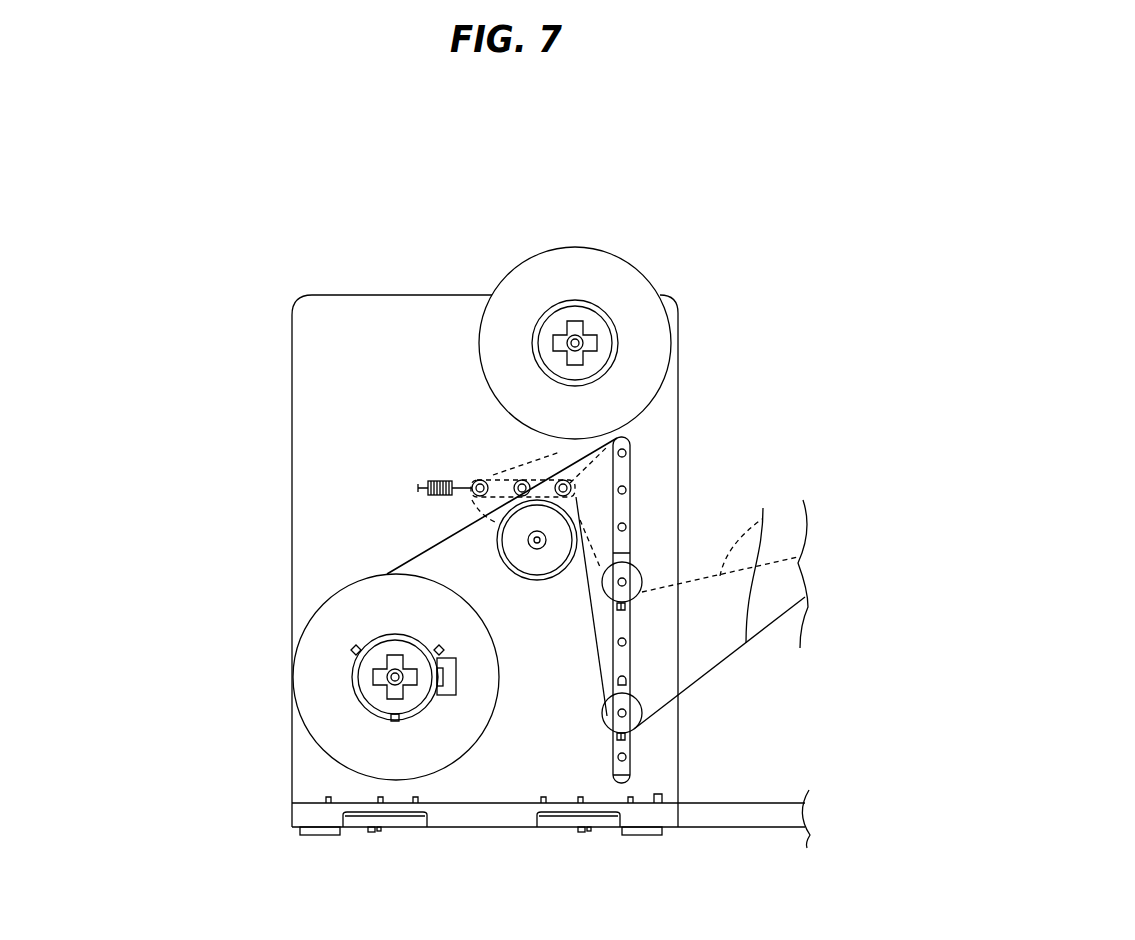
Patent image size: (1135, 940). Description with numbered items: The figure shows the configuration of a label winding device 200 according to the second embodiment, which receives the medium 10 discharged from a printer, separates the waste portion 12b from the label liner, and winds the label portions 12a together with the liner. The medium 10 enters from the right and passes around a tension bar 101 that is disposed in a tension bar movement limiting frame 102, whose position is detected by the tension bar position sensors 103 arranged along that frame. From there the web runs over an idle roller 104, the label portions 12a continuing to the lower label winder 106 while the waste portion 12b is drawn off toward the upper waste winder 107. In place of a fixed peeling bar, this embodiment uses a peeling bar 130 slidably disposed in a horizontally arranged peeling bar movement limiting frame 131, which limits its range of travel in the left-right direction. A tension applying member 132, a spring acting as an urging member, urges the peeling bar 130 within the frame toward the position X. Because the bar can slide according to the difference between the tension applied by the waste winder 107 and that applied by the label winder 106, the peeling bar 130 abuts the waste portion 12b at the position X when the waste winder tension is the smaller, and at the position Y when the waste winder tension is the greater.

The label winding device 200 is at (678, 252).
The waste winder 107 is at (569, 300).
The label winder 106 is at (353, 690).
The idle roller 104 is at (515, 532).
The peeling bar 130 is at (522, 482).
The peeling bar movement limiting frame 131 is at (490, 478).
The tension applying member 132 is at (418, 488).
The waste portion 12b is at (556, 458).
The label portions 12a is at (405, 565).
The tension bar position sensors 103 is at (610, 478).
The tension bar 101 is at (642, 567).
The tension bar movement limiting frame 102 is at (615, 659).
The medium 10 is at (763, 520).
The position X is at (477, 472).
The position Y is at (577, 474).